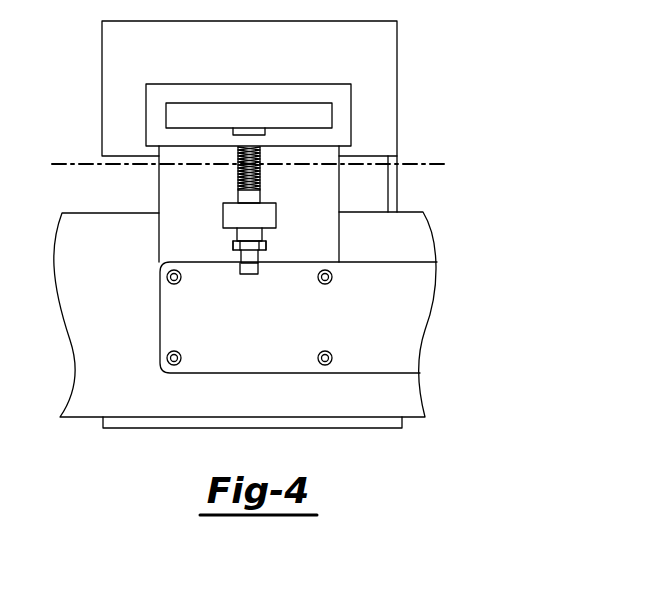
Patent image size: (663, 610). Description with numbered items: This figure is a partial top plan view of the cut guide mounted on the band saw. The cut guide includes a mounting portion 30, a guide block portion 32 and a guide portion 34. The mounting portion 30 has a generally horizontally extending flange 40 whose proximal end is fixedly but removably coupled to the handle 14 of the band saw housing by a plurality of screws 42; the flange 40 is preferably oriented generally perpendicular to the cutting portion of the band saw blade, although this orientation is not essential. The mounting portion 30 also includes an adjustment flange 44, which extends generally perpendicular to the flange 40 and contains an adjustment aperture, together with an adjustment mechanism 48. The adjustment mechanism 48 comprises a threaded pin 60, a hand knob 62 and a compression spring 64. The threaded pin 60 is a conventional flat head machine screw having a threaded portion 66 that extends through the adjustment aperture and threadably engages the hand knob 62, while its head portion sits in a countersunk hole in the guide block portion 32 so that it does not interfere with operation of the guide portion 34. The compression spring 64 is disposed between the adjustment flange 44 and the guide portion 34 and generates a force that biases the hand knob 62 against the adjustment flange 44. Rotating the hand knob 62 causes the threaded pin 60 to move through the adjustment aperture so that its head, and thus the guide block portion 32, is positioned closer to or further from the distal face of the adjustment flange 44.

The handle 14 is at (410, 313).
The mounting portion 30 is at (348, 195).
The guide block portion 32 is at (378, 110).
The guide portion 34 is at (412, 50).
The flange 40 is at (170, 251).
The screws 42 is at (167, 283).
The adjustment flange 44 is at (228, 217).
The adjustment mechanism 48 is at (281, 193).
The threaded pin 60 is at (270, 256).
The hand knob 62 is at (233, 244).
The compression spring 64 is at (263, 172).
The threaded portion 66 is at (252, 275).